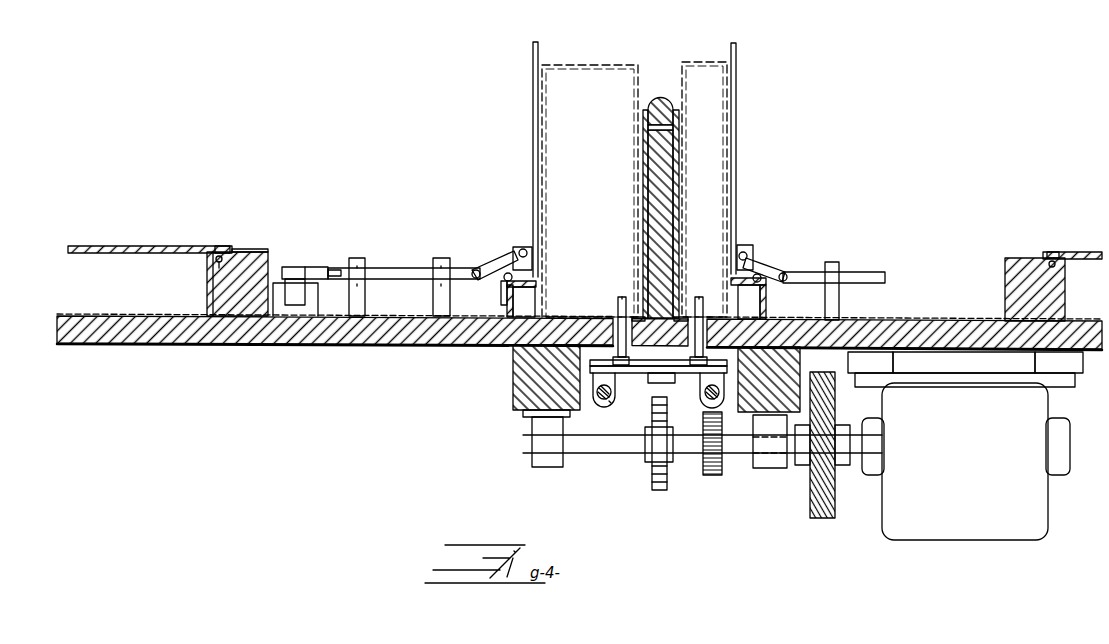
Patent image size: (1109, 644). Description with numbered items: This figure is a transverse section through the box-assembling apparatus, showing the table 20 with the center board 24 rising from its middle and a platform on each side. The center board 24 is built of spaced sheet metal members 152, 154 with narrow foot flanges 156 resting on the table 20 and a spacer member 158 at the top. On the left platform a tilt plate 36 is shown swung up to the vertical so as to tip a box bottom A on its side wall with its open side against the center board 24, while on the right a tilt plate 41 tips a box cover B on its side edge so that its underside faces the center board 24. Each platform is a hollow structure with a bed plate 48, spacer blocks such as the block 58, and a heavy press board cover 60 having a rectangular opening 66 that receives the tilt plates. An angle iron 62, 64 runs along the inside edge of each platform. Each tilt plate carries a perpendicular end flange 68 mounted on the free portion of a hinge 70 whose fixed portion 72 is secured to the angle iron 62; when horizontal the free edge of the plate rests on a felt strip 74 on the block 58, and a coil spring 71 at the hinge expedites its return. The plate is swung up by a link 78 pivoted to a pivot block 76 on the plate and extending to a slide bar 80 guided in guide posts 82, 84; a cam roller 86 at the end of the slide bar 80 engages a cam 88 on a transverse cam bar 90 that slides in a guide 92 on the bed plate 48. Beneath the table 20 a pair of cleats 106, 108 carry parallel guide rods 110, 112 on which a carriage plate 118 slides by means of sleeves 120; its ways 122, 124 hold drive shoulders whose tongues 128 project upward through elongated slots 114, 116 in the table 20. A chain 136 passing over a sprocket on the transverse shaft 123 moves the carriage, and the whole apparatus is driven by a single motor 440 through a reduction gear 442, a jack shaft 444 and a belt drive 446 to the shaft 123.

The table 20 is at (90, 345).
The center board 24 is at (668, 143).
The tilt plate 36 is at (533, 48).
The tilt plate 41 is at (737, 62).
The bed plate 48 is at (150, 318).
The spacer block 58 is at (207, 281).
The cover 60 is at (148, 246).
The angle iron 62 is at (536, 287).
The angle iron 64 is at (750, 296).
The rectangular opening 66 is at (232, 250).
The end flange 68 is at (513, 278).
The hinge 70 is at (506, 286).
The coil spring 71 is at (501, 300).
The fixed portion 72 is at (502, 322).
The felt strip 74 is at (268, 251).
The pivot block 76 is at (520, 247).
The link 78 is at (494, 262).
The slide bar 80 is at (392, 268).
The guide post 82 is at (452, 250).
The guide post 84 is at (358, 258).
The cam roller 86 is at (334, 270).
The cam 88 is at (312, 267).
The cam bar 90 is at (296, 290).
The guide 92 is at (305, 300).
The cleat 106 is at (522, 413).
The cleat 108 is at (755, 373).
The guide rod 110 is at (598, 401).
The guide rod 112 is at (707, 399).
The elongated slot 114 is at (618, 325).
The elongated slot 116 is at (704, 323).
The carriage plate 118 is at (632, 381).
The sleeve 120 is at (608, 402).
The way 122 is at (820, 397).
The transverse shaft 123 is at (603, 448).
The way 124 is at (590, 370).
The tongue 128 is at (618, 298).
The chain 136 is at (660, 492).
The sheet metal member 152 is at (643, 181).
The sheet metal member 154 is at (679, 197).
The foot flange 156 is at (637, 318).
The spacer member 158 is at (661, 97).
The motor 440 is at (978, 525).
The reduction gear 442 is at (823, 518).
The jack shaft 444 is at (758, 468).
The belt drive 446 is at (712, 476).
The box bottom A is at (598, 65).
The box cover B is at (710, 62).